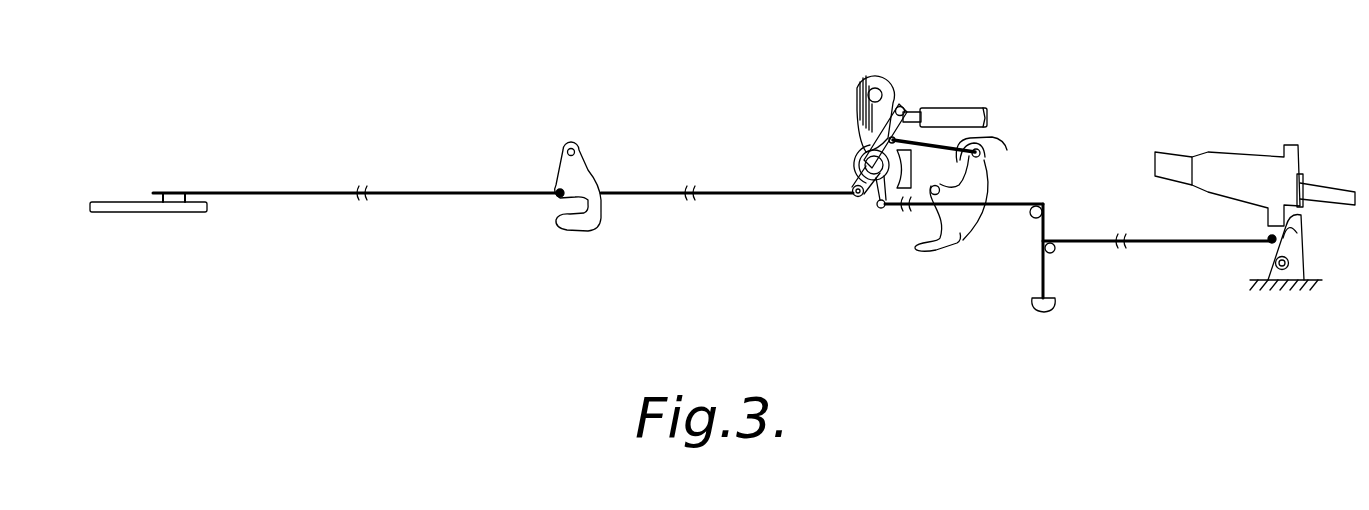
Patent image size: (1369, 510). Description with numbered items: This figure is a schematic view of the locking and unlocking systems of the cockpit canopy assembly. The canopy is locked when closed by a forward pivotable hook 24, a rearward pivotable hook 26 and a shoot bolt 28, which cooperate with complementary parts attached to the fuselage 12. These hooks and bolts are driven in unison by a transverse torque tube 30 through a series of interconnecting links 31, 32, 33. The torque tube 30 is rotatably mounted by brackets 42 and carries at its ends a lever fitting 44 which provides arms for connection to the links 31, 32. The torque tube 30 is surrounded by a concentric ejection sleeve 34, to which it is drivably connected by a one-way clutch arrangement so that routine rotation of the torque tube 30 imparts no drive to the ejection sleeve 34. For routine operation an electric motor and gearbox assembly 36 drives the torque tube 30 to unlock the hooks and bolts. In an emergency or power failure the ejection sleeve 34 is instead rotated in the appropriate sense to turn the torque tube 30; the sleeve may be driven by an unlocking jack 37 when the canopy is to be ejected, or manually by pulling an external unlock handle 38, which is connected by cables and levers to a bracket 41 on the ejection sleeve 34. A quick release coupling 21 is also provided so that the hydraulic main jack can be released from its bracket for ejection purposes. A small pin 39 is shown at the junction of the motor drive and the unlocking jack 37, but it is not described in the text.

The fuselage 12 is at (1284, 343).
The quick release coupling 21 is at (1232, 170).
The forward pivotable hook 24 is at (596, 226).
The rearward pivotable hook 26 is at (949, 235).
The shoot bolt 28 is at (147, 205).
The torque tube 30 is at (851, 162).
The interconnecting link 31 is at (994, 158).
The interconnecting link 32 is at (746, 190).
The interconnecting link 33 is at (484, 190).
The ejection sleeve 34 is at (879, 208).
The electric motor and gearbox assembly 36 is at (886, 84).
The unlocking jack 37 is at (945, 107).
The external unlock handle 38 is at (1040, 305).
The pin 39 is at (903, 107).
The bracket 41 is at (856, 207).
The bracket 42 is at (913, 168).
The lever fitting 44 is at (847, 182).